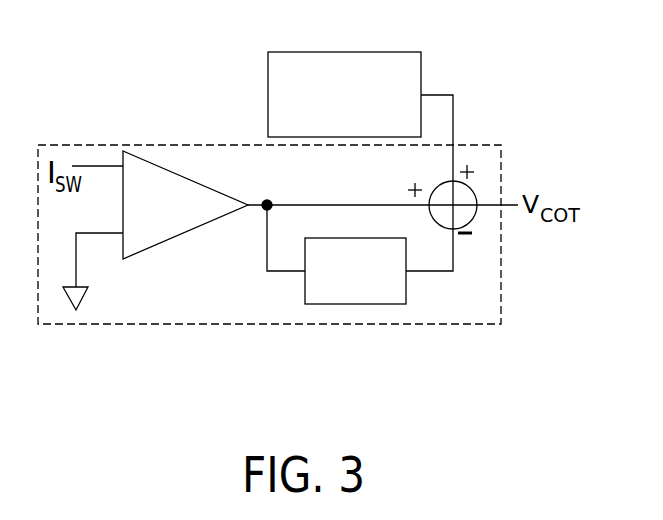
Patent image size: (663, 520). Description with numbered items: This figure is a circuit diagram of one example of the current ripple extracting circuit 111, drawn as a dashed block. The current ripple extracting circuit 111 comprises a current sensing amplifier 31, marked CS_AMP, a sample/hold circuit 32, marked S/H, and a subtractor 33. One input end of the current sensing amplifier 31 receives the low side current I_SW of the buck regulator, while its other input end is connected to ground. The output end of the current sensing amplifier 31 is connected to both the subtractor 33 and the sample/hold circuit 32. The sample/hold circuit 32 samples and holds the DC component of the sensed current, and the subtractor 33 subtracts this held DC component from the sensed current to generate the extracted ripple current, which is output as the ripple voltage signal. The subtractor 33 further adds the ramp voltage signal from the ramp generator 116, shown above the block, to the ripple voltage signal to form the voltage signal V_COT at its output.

The ramp generator 116 is at (403, 52).
The current ripple extracting circuit 111 is at (485, 145).
The current sensing amplifier 31 is at (167, 169).
The sample/hold circuit 32 is at (406, 288).
The subtractor 33 is at (472, 189).